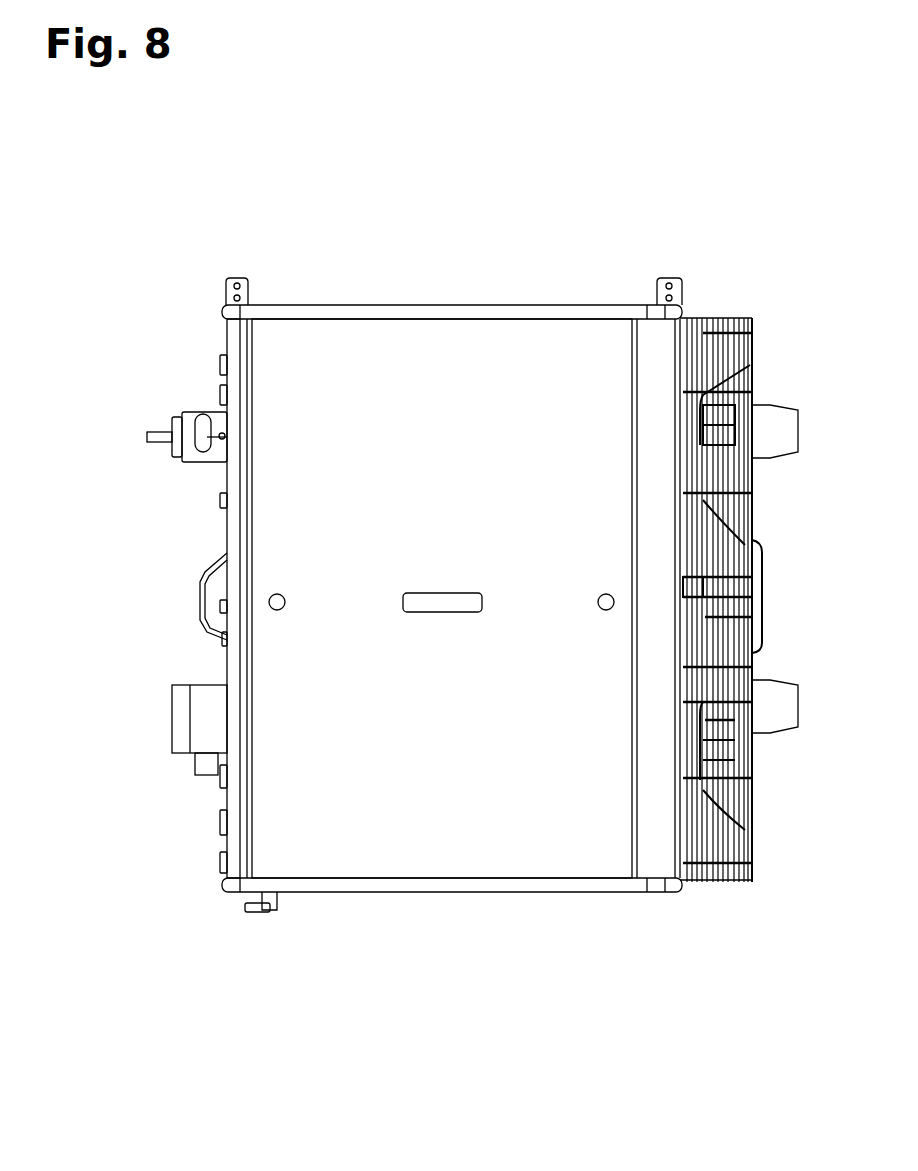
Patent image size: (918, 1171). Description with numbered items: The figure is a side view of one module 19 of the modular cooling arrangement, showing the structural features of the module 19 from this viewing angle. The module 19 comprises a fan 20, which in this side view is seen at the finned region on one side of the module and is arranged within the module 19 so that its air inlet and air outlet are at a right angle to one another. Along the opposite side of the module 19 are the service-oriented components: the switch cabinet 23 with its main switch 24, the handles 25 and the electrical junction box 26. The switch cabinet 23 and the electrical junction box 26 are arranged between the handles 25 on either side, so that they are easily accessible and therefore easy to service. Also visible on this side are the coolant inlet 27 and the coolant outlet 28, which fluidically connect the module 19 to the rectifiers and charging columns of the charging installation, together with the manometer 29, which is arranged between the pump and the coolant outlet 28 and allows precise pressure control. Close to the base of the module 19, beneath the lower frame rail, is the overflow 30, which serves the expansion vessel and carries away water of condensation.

The module 19 is at (118, 263).
The fan 20 is at (750, 478).
The switch cabinet 23 is at (222, 337).
The main switch 24 is at (147, 437).
The handle 25 is at (200, 598).
The electrical junction box 26 is at (172, 720).
The coolant inlet 27 is at (220, 778).
The coolant outlet 28 is at (220, 822).
The manometer 29 is at (220, 862).
The overflow 30 is at (273, 913).